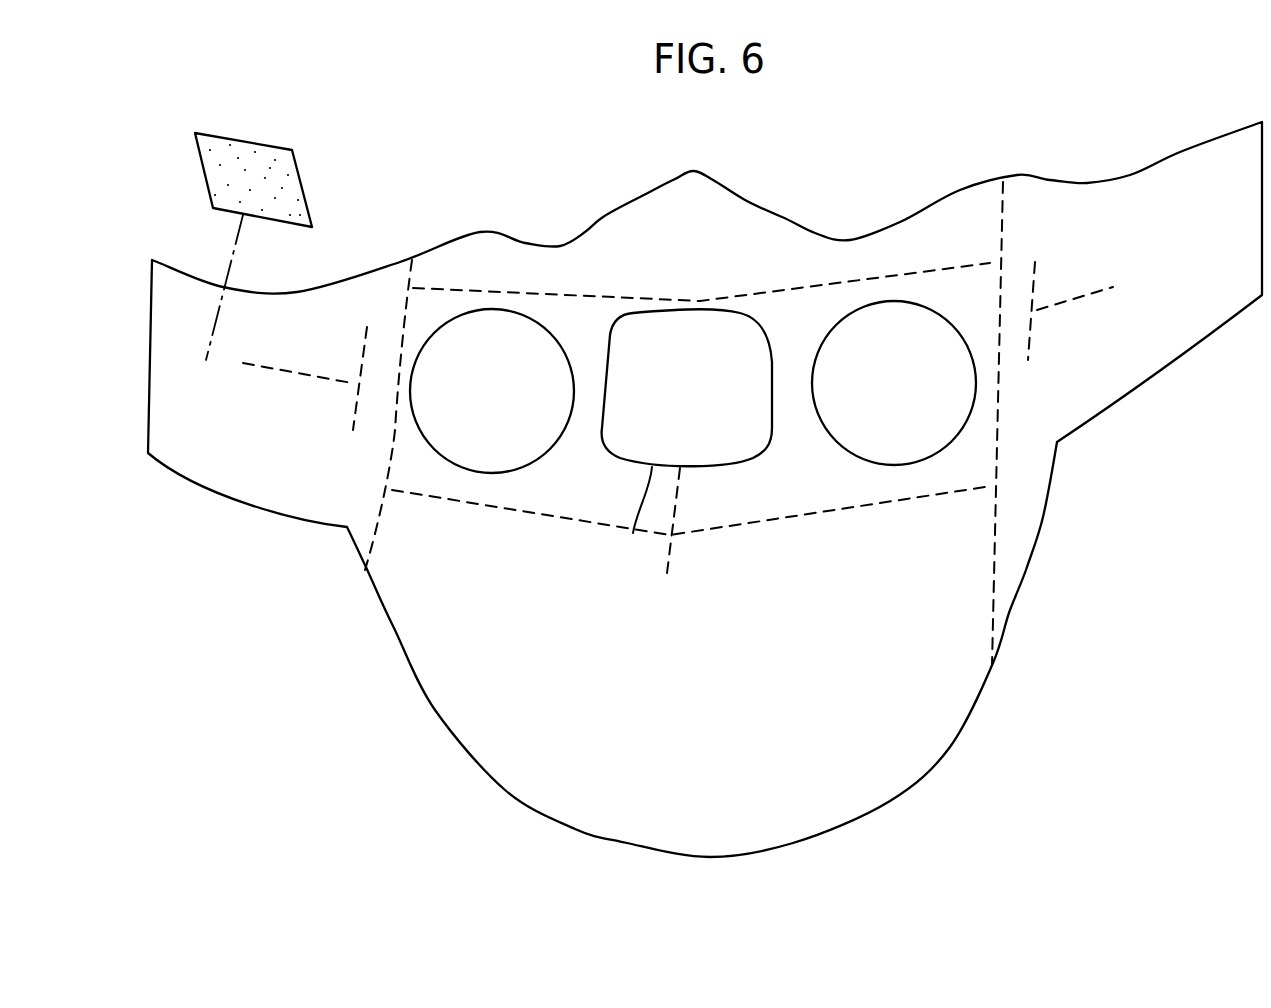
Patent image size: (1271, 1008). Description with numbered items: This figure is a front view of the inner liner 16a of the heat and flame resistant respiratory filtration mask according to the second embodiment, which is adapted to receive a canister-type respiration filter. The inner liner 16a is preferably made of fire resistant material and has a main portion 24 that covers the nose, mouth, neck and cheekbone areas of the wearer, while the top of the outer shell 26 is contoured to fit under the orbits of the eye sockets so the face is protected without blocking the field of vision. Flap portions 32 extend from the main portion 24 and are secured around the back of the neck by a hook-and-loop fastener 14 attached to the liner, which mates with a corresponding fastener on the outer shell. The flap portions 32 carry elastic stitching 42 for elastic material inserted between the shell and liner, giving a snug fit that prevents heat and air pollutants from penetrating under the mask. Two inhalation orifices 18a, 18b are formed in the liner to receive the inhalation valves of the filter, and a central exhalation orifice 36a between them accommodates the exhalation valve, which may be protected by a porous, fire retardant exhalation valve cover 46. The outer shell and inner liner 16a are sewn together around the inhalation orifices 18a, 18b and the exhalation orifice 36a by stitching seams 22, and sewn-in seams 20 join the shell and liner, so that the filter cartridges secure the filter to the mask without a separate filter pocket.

The fastener 14 is at (197, 155).
The inner liner 16a is at (685, 537).
The inhalation orifice 18a is at (950, 443).
The inhalation orifice 18b is at (483, 310).
The sewn-in seam 20 is at (770, 310).
The stitching seam 22 is at (397, 282).
The main portion 24 is at (723, 857).
The top of the outer shell 26 is at (750, 193).
The flap portion 32 is at (1167, 348).
The central exhalation orifice 36a is at (753, 457).
The elastic stitching 42 is at (283, 373).
The exhalation valve cover 46 is at (633, 521).